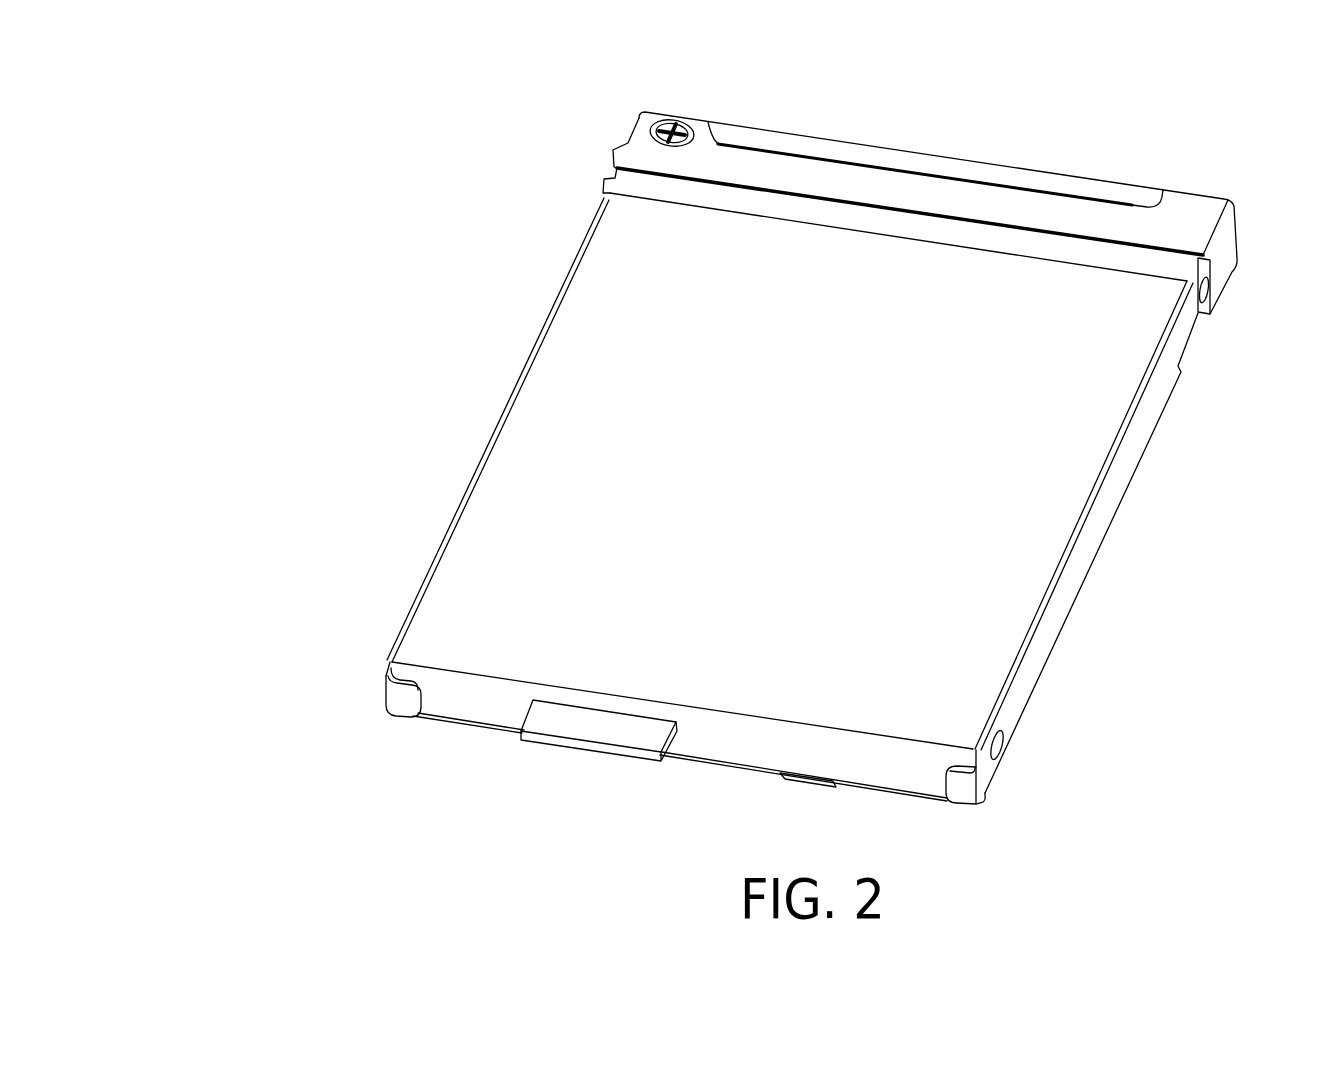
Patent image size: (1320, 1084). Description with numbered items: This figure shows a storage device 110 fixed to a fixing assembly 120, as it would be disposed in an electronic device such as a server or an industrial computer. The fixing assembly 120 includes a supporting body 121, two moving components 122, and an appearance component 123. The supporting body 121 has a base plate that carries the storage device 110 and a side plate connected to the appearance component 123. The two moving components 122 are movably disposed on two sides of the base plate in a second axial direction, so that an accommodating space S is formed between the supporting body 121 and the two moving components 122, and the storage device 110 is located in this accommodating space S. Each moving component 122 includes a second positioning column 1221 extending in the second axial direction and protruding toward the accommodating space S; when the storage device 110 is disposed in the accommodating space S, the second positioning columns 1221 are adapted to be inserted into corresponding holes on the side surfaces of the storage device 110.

The storage device 110 is at (480, 626).
The fixing assembly 120 is at (699, 434).
The supporting body 121 is at (766, 201).
The moving component 122 is at (551, 311).
The appearance component 123 is at (962, 202).
The second positioning column 1221 is at (1003, 744).
The accommodating space S is at (488, 447).